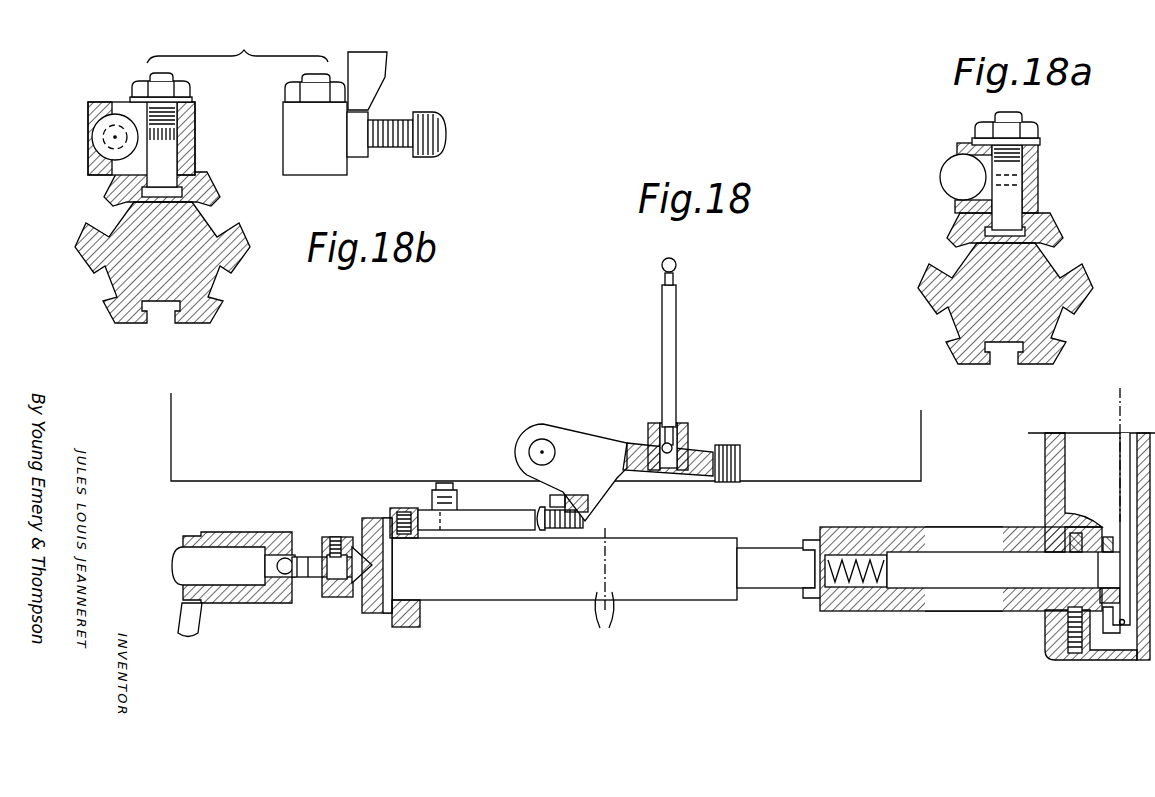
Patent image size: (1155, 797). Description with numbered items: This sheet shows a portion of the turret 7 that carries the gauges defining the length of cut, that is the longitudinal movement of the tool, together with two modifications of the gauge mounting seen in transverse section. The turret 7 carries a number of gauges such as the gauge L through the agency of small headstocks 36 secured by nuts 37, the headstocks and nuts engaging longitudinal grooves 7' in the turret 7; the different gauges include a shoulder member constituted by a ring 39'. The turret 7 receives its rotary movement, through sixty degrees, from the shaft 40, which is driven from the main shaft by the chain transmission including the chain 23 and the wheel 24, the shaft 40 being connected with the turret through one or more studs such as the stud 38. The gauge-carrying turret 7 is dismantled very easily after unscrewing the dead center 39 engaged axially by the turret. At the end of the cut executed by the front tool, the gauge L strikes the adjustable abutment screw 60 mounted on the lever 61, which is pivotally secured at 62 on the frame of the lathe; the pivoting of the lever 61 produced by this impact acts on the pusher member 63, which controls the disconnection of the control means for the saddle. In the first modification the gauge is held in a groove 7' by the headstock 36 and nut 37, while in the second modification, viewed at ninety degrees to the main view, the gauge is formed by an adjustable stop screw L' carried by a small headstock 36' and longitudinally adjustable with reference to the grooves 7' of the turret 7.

In FIG. 18, the turret 7 is at (604, 592).
In FIG. 18A, the turret 7 is at (998, 303).
In FIG. 18B, the turret 7 is at (159, 262).
In FIG. 18A, the longitudinal grooves 7' is at (1023, 230).
In FIG. 18B, the longitudinal grooves 7' is at (179, 189).
In FIG. 18, the chain 23 is at (1120, 433).
In FIG. 18, the wheel 24 is at (1118, 518).
In FIG. 18, the small headstock 36 is at (413, 493).
In FIG. 18A, the small headstock 36 is at (1019, 171).
In FIG. 18B, the small headstock 36' is at (167, 130).
In FIG. 18, the nut 37 is at (455, 490).
In FIG. 18, the stud 38 is at (812, 537).
In FIG. 18, the dead center 39 is at (272, 594).
In FIG. 18, the ring 39' is at (376, 556).
In FIG. 18, the shaft 40 is at (985, 595).
In FIG. 18, the adjustable abutment screw 60 is at (590, 522).
In FIG. 18, the lever 61 is at (596, 445).
In FIG. 18, the pivot 62 is at (545, 440).
In FIG. 18, the pusher member 63 is at (672, 352).
In FIG. 18, the gauge L is at (603, 560).
In FIG. 18A, the gauge L is at (939, 177).
In FIG. 18B, the adjustable stop screw L' is at (265, 113).